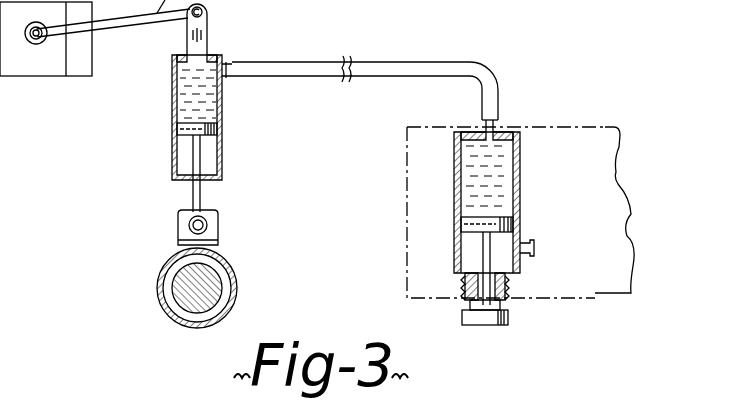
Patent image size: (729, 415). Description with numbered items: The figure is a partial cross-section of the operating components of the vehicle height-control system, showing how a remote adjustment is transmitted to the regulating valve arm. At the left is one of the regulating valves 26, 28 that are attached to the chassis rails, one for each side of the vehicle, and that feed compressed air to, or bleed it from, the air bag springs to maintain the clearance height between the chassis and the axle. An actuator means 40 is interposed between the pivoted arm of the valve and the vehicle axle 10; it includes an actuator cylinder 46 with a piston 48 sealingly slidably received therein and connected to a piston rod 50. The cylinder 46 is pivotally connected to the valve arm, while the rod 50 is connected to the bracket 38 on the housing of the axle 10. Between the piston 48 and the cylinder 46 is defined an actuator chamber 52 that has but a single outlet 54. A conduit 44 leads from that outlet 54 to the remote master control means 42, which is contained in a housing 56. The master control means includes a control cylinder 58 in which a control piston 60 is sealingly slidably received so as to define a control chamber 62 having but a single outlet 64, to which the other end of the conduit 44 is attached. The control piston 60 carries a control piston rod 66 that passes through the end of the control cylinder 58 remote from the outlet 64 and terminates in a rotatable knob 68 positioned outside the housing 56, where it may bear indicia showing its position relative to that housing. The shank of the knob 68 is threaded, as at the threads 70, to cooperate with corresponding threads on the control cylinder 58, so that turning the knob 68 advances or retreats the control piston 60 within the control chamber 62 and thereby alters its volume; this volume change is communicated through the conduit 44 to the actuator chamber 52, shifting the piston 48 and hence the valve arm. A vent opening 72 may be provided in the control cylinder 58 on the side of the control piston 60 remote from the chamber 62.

The vehicle axle 10 is at (236, 294).
The regulating valve 26 is at (46, 64).
The regulating valve 28 is at (36, 33).
The bracket 38 is at (216, 238).
The actuator means 40 is at (191, 146).
The master control means 42 is at (405, 214).
The conduit 44 is at (454, 62).
The actuator cylinder 46 is at (223, 150).
The piston 48 is at (183, 128).
The piston rod 50 is at (235, 173).
The actuator chamber 52 is at (186, 100).
The outlet 54 is at (230, 62).
The housing 56 is at (595, 126).
The control cylinder 58 is at (522, 158).
The control piston 60 is at (494, 226).
The control chamber 62 is at (468, 164).
The outlet 64 is at (497, 128).
The control piston rod 66 is at (481, 243).
The knob 68 is at (510, 316).
The threads 70 is at (466, 286).
The vent opening 72 is at (534, 256).